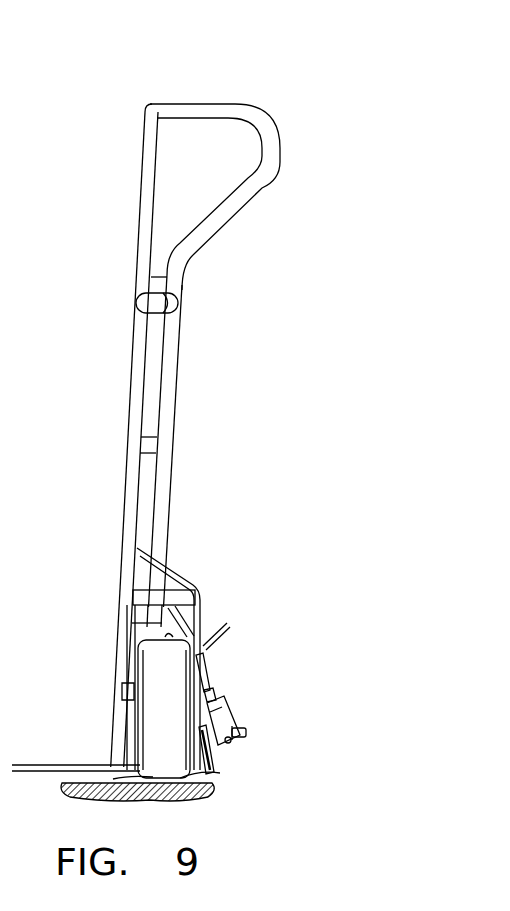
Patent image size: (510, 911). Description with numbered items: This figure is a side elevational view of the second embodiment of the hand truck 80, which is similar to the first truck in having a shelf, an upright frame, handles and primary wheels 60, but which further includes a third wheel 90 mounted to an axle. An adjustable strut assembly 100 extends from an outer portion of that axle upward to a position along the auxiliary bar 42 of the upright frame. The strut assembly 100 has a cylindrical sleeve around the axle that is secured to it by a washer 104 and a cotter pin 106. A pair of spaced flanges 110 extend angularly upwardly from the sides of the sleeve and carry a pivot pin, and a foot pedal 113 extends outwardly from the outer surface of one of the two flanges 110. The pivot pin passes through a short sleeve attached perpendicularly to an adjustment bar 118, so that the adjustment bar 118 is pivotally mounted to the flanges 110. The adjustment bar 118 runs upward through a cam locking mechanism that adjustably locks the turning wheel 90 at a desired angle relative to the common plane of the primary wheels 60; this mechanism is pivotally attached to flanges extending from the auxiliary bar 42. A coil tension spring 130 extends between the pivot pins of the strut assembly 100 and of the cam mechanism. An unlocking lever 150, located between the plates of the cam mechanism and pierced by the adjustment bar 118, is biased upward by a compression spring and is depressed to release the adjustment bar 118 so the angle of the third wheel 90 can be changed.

The hand truck 80 is at (201, 93).
The auxiliary bar 42 is at (167, 412).
The primary wheels 60 is at (92, 790).
The third wheel 90 is at (213, 773).
The adjustable strut assembly 100 is at (212, 677).
The washer 104 is at (212, 757).
The cotter pin 106 is at (232, 739).
The spaced flanges 110 is at (212, 713).
The foot pedal 113 is at (240, 733).
The adjustment bar 118 is at (198, 618).
The coil tension spring 130 is at (212, 690).
The unlocking lever 150 is at (227, 631).